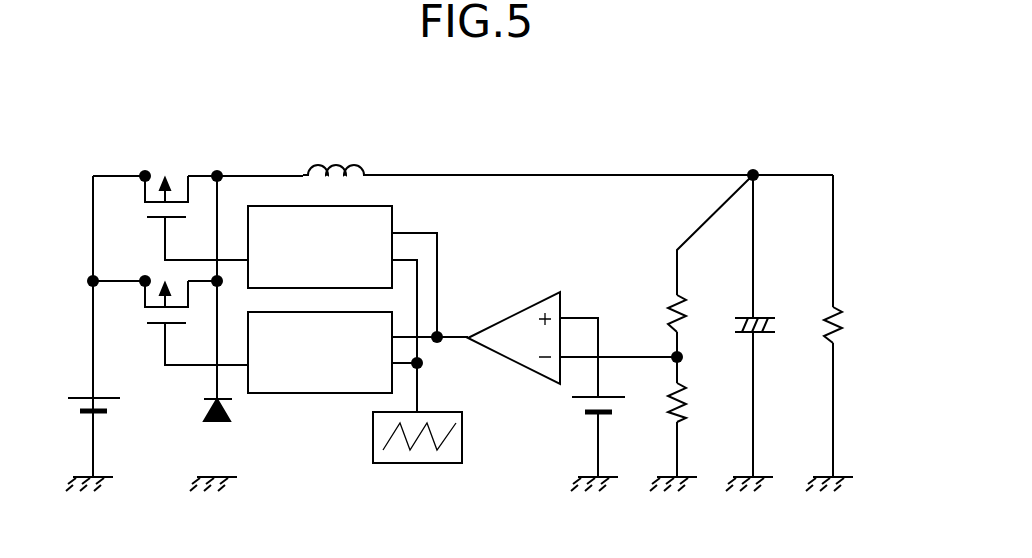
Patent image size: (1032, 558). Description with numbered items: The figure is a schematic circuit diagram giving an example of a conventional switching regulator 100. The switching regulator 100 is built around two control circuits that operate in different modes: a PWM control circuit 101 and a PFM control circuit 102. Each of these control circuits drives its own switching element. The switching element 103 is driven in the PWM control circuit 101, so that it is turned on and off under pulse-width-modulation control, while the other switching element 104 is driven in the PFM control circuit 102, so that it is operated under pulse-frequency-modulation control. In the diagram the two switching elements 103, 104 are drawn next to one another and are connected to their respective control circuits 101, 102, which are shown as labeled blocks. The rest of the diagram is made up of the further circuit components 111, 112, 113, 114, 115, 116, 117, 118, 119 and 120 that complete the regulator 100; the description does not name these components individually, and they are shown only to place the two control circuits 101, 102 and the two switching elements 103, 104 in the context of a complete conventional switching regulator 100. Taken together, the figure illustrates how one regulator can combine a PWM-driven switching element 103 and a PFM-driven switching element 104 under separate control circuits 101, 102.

The switching regulator 100 is at (650, 142).
The PWM control circuit 101 is at (395, 208).
The PFM control circuit 102 is at (320, 395).
The switching element 103 is at (172, 176).
The switching element 104 is at (148, 313).
The input power supply 111 is at (72, 403).
The inductor 112 is at (333, 158).
The diode 113 is at (210, 421).
The output capacitor 114 is at (730, 326).
The load resistor 115 is at (846, 325).
The voltage divider resistor 116 is at (668, 302).
The voltage divider resistor 117 is at (668, 410).
The reference voltage source 118 is at (588, 410).
The comparator 119 is at (507, 318).
The sawtooth wave oscillator 120 is at (420, 465).